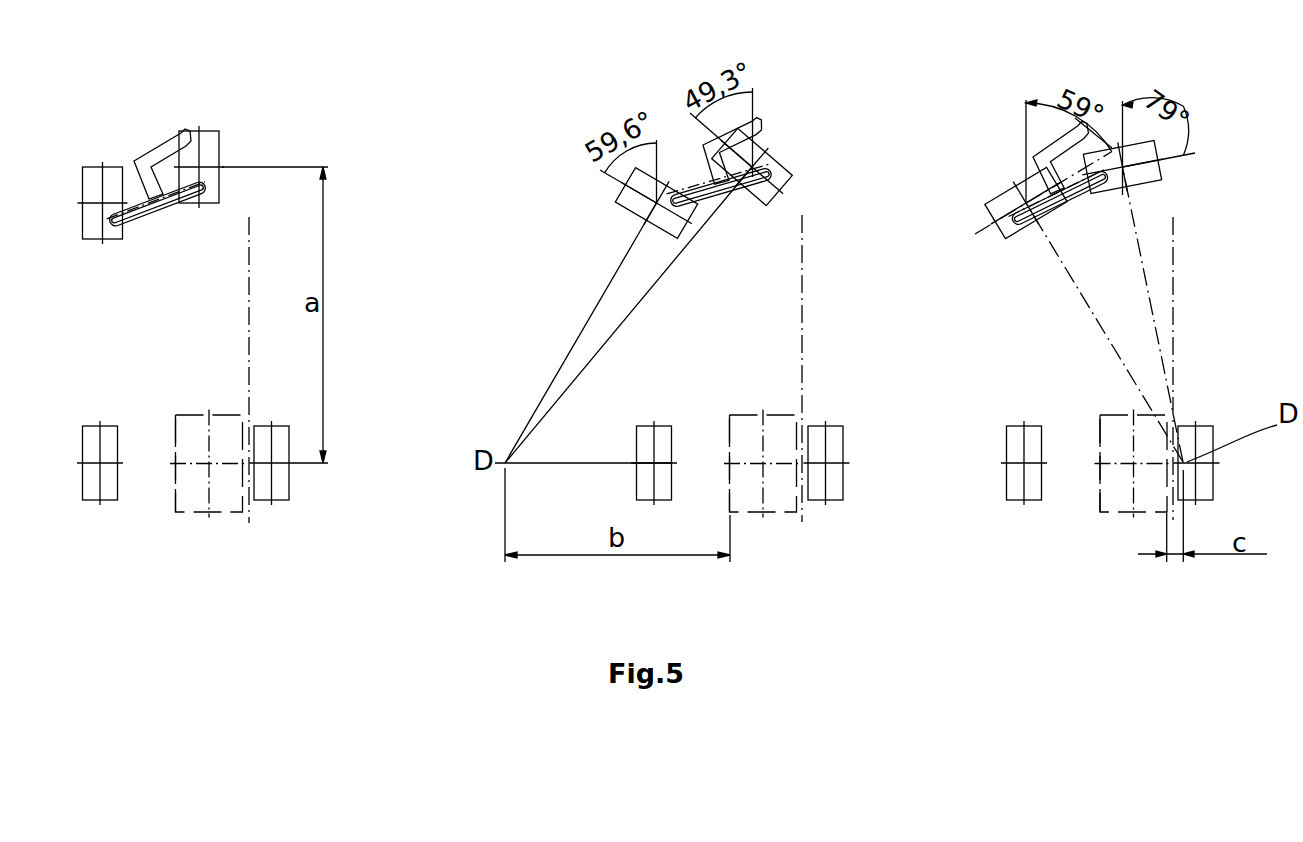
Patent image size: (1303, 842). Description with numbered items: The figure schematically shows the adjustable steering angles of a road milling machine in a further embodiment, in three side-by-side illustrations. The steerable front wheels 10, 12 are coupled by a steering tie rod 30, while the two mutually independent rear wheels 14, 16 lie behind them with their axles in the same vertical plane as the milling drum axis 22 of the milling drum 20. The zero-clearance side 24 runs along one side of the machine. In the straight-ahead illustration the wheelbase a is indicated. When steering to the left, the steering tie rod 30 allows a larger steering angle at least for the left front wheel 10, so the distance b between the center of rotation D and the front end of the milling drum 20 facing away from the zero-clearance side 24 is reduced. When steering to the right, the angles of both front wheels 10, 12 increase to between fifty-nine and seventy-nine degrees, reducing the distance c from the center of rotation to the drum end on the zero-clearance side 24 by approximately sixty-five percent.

The front wheel 10 is at (90, 178).
The front wheel 12 is at (205, 140).
The rear wheel 14 is at (90, 441).
The rear wheel 16 is at (278, 435).
The milling drum 20 is at (227, 428).
The milling drum axis 22 is at (192, 457).
The zero-clearance side 24 is at (248, 284).
The steering tie rod 30 is at (145, 163).